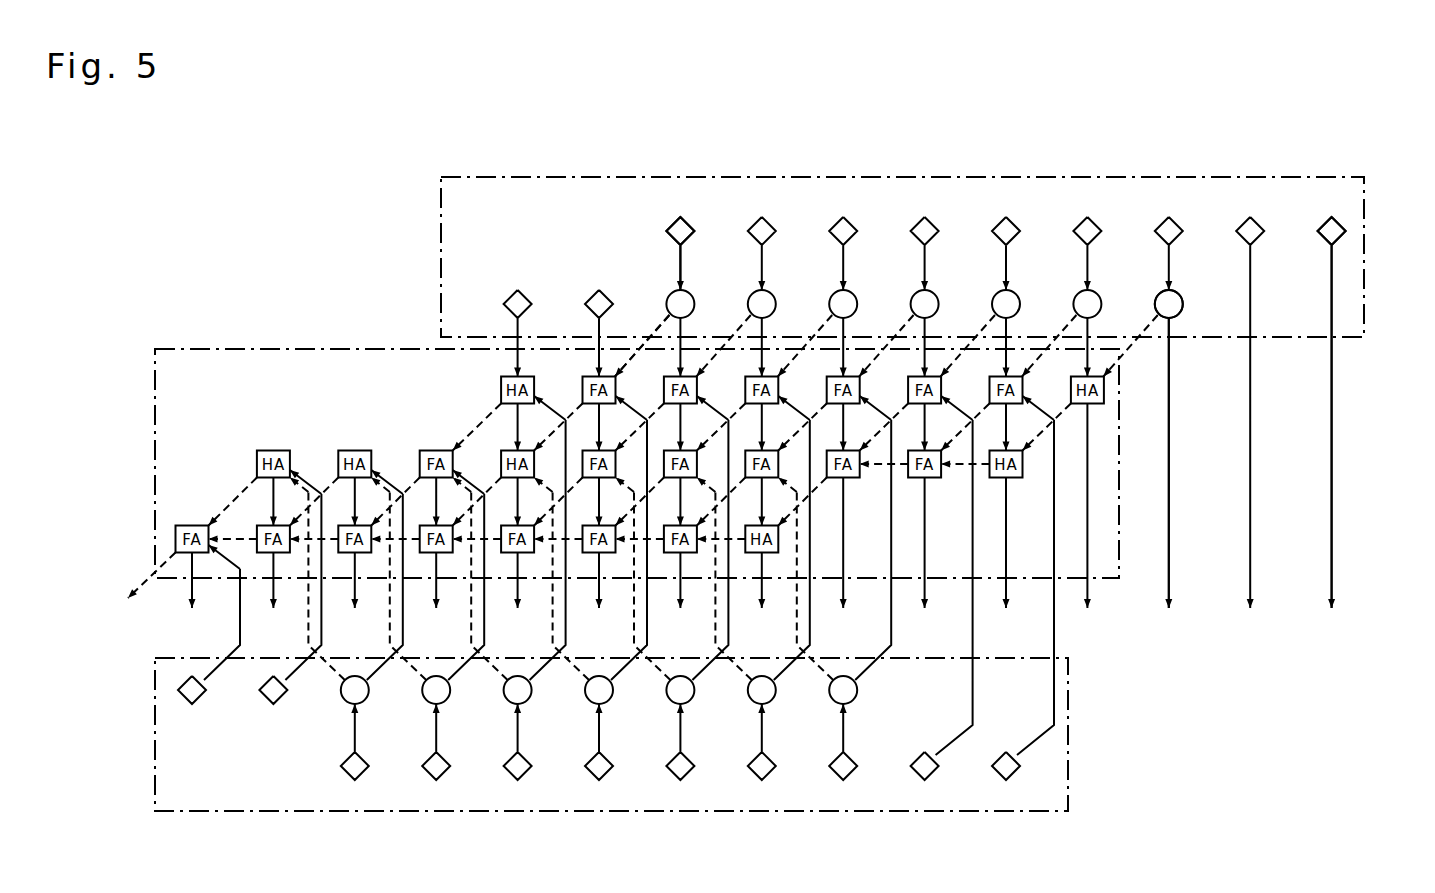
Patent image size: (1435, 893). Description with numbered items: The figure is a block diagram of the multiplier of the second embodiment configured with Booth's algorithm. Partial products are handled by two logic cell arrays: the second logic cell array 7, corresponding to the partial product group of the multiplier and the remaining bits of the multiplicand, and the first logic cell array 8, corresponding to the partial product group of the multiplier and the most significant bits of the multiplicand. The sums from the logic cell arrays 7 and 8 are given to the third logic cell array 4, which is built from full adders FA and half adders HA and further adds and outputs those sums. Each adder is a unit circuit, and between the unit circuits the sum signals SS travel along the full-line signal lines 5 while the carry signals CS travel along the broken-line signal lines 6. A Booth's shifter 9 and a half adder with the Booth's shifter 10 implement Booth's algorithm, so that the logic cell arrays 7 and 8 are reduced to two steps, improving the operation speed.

The third logic cell array 4 is at (300, 349).
The signal line 5 is at (678, 254).
The signal line 6 is at (660, 322).
The second logic cell array 7 is at (441, 233).
The first logic cell array 8 is at (155, 740).
The Booth's shifter 9 is at (1343, 223).
The half adder with the Booth's shifter 10 is at (1183, 305).